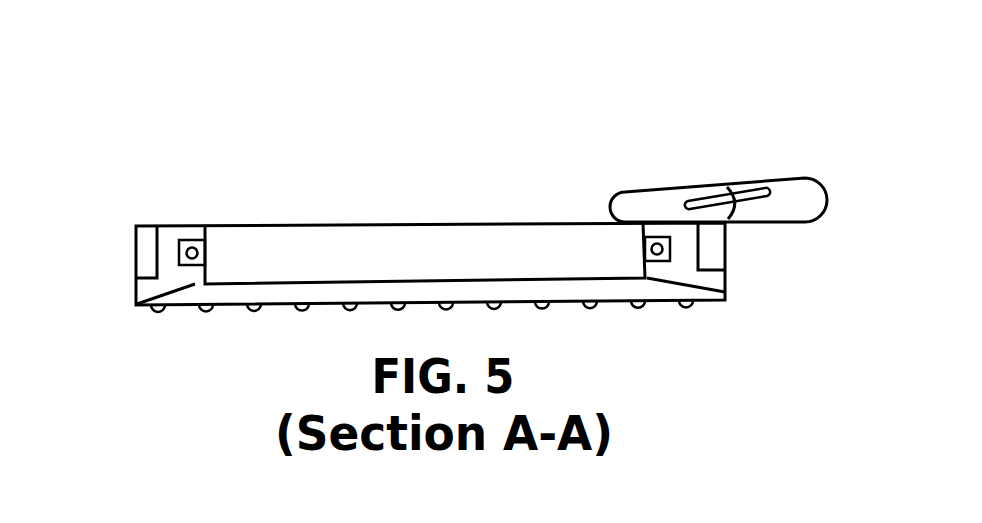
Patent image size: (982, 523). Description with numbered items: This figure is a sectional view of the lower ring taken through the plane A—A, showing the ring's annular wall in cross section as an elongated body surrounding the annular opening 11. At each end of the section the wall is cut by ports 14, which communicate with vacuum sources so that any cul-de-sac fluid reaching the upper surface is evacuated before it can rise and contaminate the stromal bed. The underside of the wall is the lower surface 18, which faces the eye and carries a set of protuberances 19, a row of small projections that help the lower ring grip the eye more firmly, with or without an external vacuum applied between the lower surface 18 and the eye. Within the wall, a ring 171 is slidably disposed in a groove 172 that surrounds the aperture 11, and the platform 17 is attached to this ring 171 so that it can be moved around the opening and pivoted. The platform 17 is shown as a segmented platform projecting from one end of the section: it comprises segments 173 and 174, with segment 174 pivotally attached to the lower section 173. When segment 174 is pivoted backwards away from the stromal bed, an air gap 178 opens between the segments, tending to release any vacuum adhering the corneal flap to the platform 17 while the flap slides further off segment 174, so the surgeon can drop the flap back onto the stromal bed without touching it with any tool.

The annular opening 11 is at (413, 253).
The ports 14 is at (146, 248).
The platform 17 is at (720, 121).
The lower surface 18 is at (175, 290).
The protuberances 19 is at (640, 310).
The ring 171 is at (208, 240).
The groove 172 is at (188, 240).
The segment 173 is at (655, 188).
The segment 174 is at (785, 176).
The air gap 178 is at (723, 188).